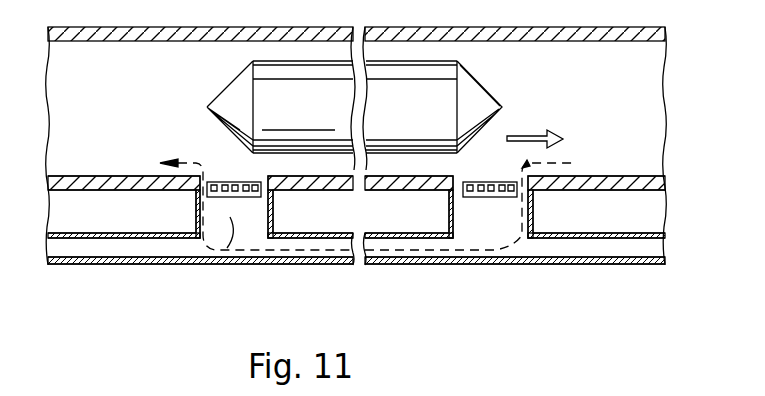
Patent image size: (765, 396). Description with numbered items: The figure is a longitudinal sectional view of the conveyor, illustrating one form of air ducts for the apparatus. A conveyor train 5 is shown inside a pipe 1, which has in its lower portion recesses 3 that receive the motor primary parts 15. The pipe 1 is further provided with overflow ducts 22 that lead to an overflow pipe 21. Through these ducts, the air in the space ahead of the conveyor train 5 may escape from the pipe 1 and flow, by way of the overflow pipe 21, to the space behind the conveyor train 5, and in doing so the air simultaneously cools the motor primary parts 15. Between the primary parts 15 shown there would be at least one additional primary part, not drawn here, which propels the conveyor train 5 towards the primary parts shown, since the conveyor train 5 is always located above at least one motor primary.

The pipe 1 is at (623, 182).
The recess 3 is at (271, 196).
The conveyor train 5 is at (330, 128).
The primary part 15 is at (488, 197).
The overflow pipe 21 is at (541, 256).
The overflow duct 22 is at (227, 248).